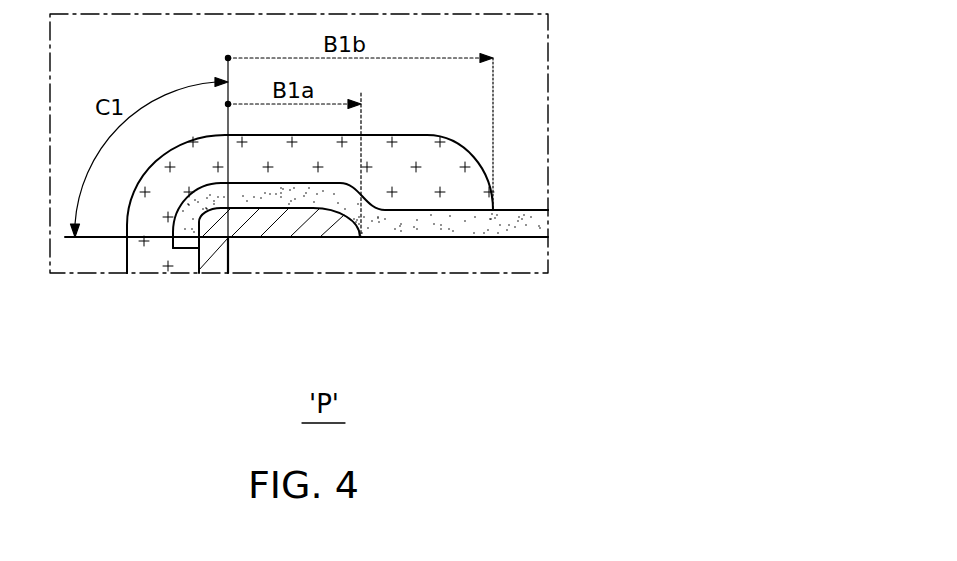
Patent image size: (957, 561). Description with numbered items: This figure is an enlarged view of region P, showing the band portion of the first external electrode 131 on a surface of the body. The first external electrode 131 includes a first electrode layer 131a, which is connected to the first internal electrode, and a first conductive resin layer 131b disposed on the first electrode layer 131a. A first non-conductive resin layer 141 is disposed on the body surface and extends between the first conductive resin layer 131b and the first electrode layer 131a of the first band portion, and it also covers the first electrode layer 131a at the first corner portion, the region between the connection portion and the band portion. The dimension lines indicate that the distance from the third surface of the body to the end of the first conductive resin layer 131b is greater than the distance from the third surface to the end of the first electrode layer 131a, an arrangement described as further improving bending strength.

The first external electrode 131 is at (180, 306).
The first electrode layer 131a is at (216, 274).
The first conductive resin layer 131b is at (152, 274).
The first non-conductive resin layer 141 is at (308, 197).